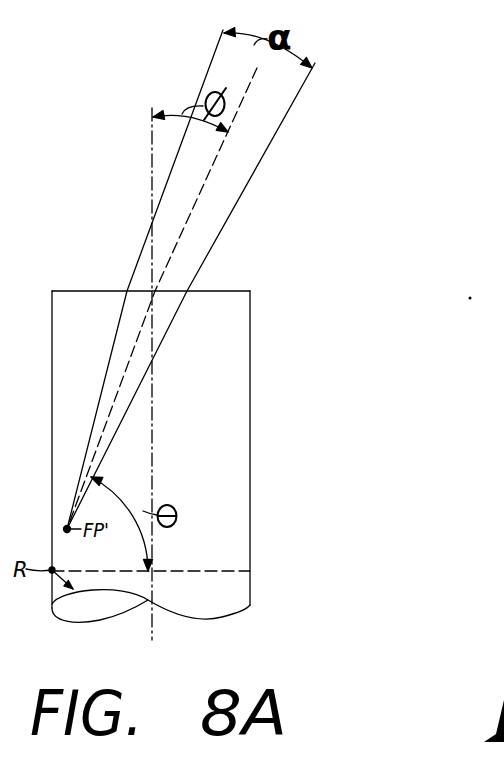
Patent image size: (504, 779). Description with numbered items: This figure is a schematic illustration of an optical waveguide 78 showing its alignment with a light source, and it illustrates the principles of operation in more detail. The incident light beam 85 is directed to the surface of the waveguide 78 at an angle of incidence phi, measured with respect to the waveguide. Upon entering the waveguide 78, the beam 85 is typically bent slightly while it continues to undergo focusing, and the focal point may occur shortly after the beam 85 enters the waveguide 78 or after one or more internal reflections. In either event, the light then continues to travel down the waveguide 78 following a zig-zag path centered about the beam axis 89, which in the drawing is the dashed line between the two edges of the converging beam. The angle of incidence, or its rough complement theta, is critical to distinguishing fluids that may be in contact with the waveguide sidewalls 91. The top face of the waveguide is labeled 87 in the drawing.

The waveguide 78 is at (223, 428).
The incident light beam 85 is at (260, 136).
The top face 87 is at (232, 291).
The beam axis 89 is at (127, 368).
The waveguide sidewalls 91 is at (52, 445).